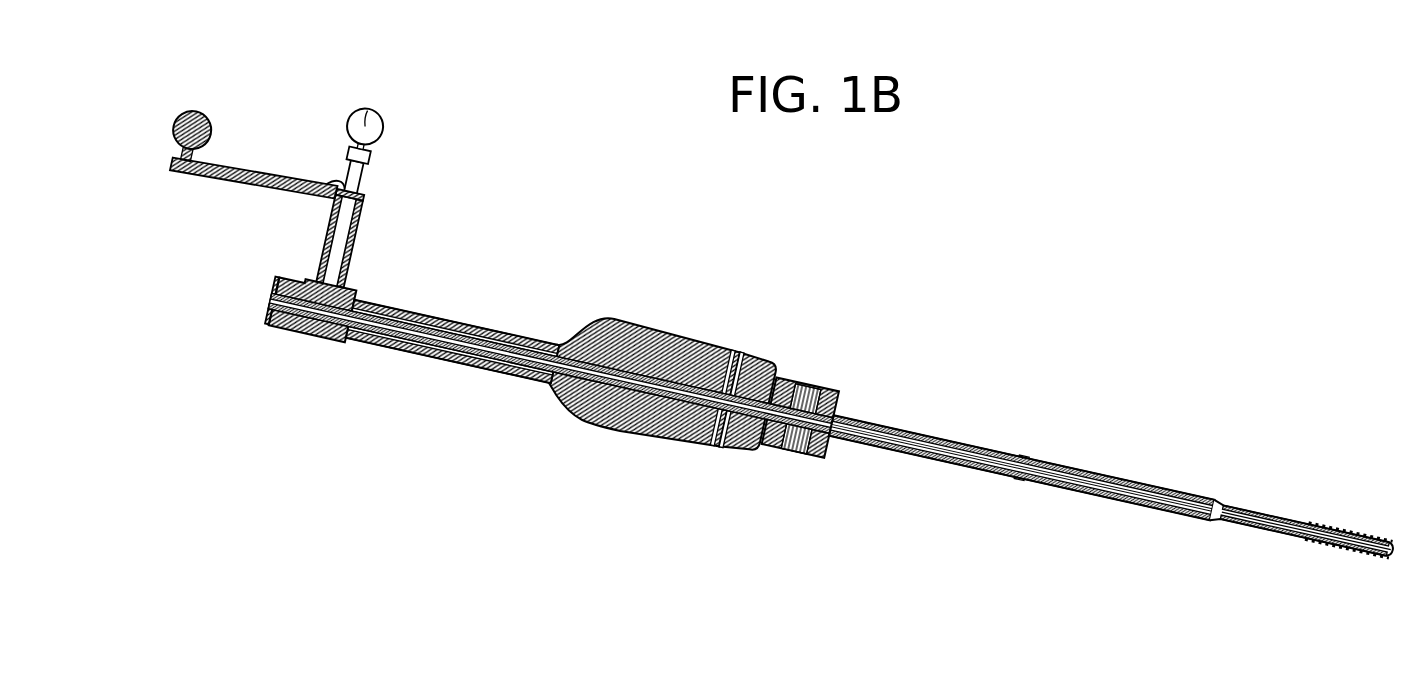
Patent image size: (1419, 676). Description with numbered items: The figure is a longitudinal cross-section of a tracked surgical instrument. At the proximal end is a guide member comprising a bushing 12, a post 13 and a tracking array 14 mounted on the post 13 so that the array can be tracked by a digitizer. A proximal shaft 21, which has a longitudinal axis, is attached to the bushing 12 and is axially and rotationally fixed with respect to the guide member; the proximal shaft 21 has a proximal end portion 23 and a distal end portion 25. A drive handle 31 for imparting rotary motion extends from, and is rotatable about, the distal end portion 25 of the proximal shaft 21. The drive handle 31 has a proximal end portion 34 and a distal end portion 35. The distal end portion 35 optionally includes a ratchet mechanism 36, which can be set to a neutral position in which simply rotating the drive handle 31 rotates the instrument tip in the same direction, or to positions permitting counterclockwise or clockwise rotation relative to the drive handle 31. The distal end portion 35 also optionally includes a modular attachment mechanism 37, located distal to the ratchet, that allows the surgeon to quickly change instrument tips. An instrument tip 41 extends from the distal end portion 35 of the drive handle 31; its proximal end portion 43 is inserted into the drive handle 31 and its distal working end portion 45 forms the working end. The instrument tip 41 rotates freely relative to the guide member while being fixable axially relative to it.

The bushing 12 is at (313, 333).
The post 13 is at (364, 238).
The tracking array 14 is at (320, 171).
The proximal shaft 21 is at (448, 379).
The proximal end portion 23 is at (267, 318).
The distal end portion 25 is at (514, 342).
The drive handle 31 is at (665, 332).
The proximal end portion 34 is at (578, 328).
The distal end portion 35 is at (686, 333).
The ratchet mechanism 36 is at (750, 339).
The modular attachment mechanism 37 is at (807, 383).
The instrument tip 41 is at (1150, 508).
The proximal end portion 43 is at (883, 428).
The distal working end portion 45 is at (1349, 561).